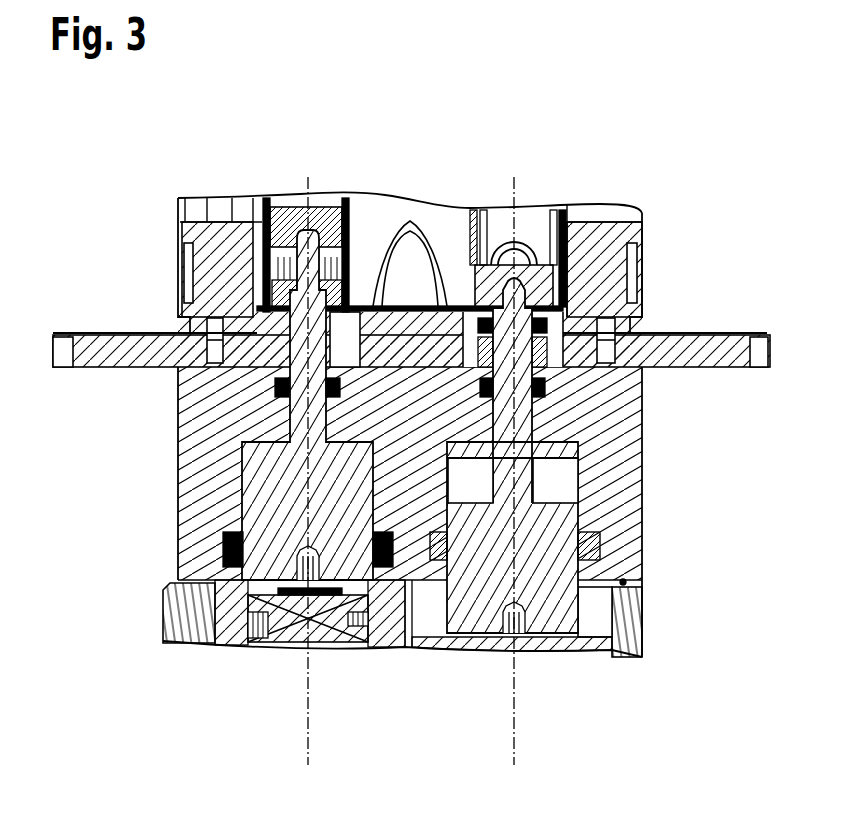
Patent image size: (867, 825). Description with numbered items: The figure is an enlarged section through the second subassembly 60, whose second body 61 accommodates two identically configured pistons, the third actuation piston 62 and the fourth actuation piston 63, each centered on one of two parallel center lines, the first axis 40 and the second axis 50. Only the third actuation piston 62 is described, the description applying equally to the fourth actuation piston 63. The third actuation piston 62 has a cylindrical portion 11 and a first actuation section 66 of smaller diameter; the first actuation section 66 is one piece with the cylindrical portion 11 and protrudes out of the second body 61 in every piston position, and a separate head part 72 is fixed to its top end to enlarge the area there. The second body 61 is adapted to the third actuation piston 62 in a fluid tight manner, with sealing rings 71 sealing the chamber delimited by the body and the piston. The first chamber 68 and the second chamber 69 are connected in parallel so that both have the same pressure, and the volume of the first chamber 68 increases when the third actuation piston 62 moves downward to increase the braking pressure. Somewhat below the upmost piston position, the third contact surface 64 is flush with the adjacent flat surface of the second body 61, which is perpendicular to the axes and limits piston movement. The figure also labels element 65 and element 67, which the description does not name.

The cylindrical portion 11 is at (417, 512).
The first axis 40 is at (308, 745).
The second axis 50 is at (514, 745).
The second subassembly 60 is at (686, 579).
The second body 61 is at (624, 580).
The third actuation piston 62 is at (253, 514).
The fourth actuation piston 63 is at (562, 614).
The third contact surface 64 is at (285, 647).
The bottom plate 65 is at (558, 637).
The first actuation section 66 is at (282, 333).
The valve rod 67 is at (560, 292).
The first chamber 68 is at (244, 405).
The second chamber 69 is at (582, 447).
The sealing rings 71 is at (275, 384).
The head part 72 is at (285, 200).